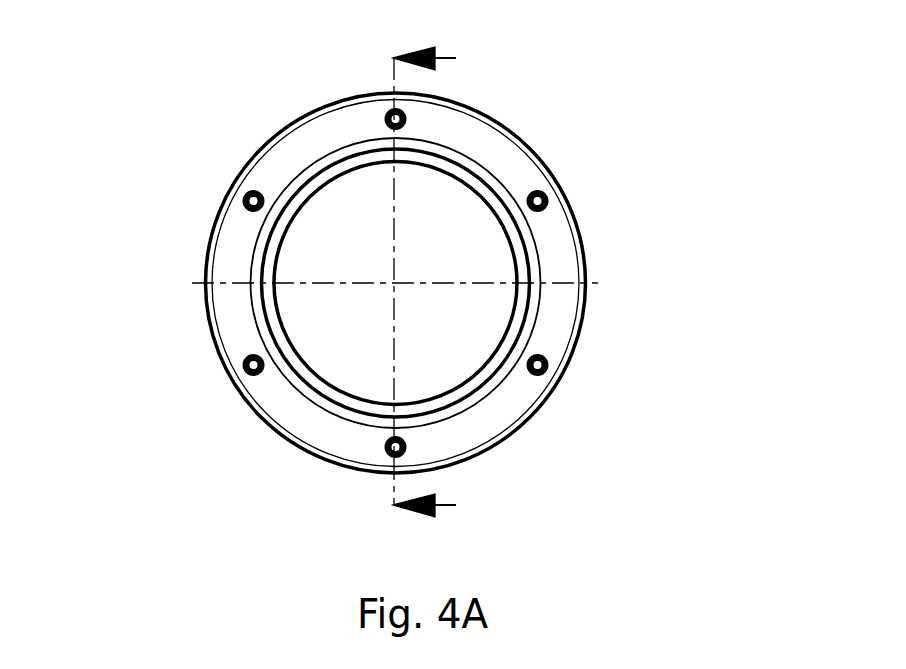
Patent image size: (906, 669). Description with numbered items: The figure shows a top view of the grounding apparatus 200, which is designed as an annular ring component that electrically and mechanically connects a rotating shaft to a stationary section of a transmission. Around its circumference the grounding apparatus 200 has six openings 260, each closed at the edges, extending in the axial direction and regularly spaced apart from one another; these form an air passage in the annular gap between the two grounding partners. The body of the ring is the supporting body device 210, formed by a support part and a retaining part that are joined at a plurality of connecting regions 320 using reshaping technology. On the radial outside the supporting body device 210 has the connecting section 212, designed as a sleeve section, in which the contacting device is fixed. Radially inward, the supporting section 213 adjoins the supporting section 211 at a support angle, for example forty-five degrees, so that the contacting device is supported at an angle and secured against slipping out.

The grounding apparatus 200 is at (410, 286).
The supporting body device 210 is at (278, 415).
The supporting section 211 is at (270, 184).
The connecting section 212 is at (270, 140).
The supporting section 213 is at (282, 365).
The openings 260 is at (384, 298).
The connecting regions 320 is at (388, 111).